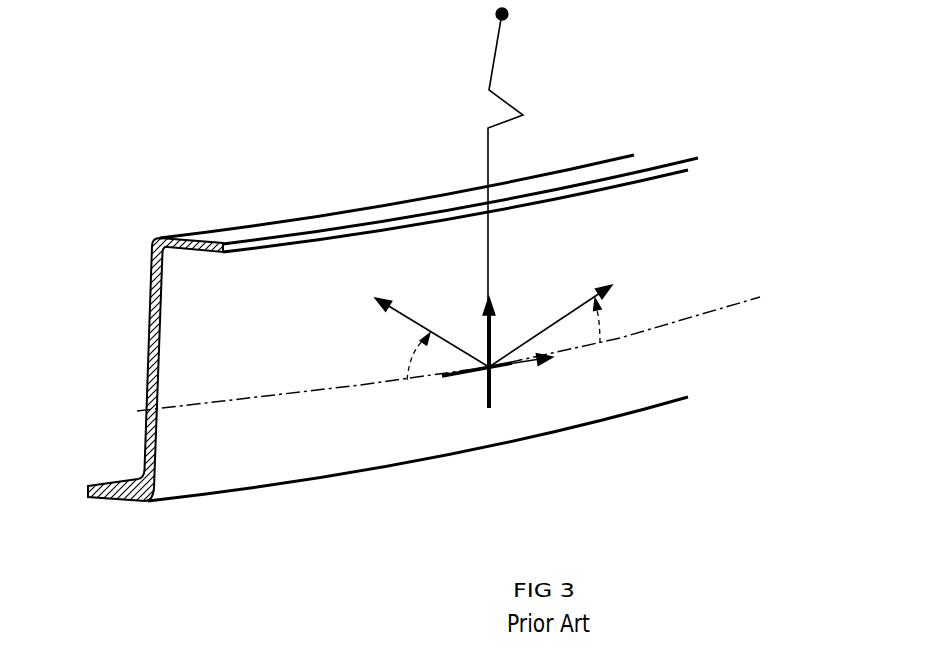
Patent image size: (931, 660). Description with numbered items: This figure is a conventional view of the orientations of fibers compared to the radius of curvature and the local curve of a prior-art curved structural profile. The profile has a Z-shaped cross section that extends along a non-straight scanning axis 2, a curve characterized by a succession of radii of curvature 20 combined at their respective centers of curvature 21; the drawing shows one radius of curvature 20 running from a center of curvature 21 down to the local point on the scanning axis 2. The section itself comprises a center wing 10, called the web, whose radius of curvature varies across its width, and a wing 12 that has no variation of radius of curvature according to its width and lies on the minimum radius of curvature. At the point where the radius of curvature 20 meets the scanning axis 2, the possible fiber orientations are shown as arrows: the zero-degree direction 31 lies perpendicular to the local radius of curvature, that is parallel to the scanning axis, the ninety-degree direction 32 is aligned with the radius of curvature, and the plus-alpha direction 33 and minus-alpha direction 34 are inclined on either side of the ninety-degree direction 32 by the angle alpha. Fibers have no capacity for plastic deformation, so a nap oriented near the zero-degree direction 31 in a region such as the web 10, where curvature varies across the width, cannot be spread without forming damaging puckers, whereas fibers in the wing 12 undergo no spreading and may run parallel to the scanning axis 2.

The scanning axis 2 is at (240, 400).
The center wing 10 is at (238, 457).
The wing 12 is at (602, 175).
The radius of curvature 20 is at (497, 49).
The center of curvature 21 is at (500, 13).
The 0° direction 31 is at (545, 360).
The 90° direction 32 is at (488, 334).
The +α direction 33 is at (558, 321).
The -α direction 34 is at (420, 322).